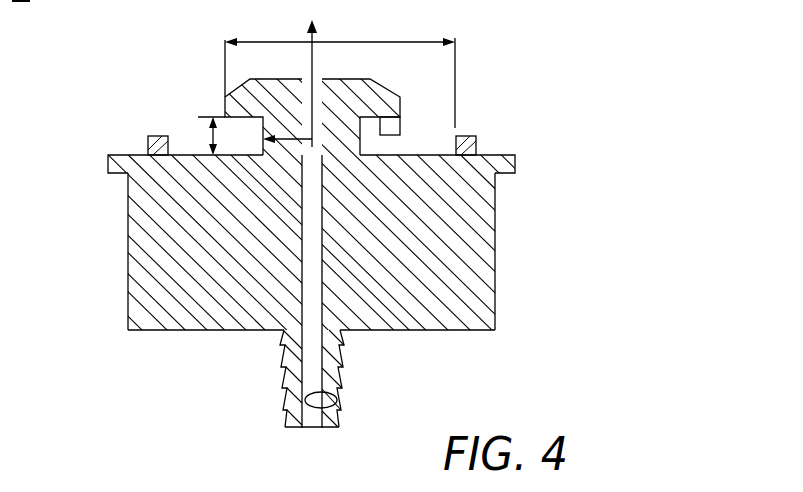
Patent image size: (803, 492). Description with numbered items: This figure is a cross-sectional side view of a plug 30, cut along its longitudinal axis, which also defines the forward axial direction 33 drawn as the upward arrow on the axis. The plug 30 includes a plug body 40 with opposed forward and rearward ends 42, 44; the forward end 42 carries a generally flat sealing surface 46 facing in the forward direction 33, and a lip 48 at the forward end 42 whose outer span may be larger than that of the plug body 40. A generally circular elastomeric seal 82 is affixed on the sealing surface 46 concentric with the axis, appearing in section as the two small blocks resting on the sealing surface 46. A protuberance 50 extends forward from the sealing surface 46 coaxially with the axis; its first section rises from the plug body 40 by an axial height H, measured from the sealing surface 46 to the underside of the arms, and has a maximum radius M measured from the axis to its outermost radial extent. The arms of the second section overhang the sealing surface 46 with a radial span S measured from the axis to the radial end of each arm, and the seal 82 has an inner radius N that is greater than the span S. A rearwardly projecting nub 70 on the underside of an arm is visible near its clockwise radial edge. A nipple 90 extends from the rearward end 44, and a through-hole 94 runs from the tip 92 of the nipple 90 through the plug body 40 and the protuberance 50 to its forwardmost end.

The plug 30 is at (122, 132).
The forward axial direction 33 is at (325, 17).
The plug body 40 is at (128, 253).
The forward end 42 is at (128, 181).
The rearward end 44 is at (128, 328).
The sealing surface 46 is at (188, 155).
The lip 48 is at (515, 163).
The protuberance 50 is at (349, 74).
The nub 70 is at (389, 126).
The elastomeric seal 82 is at (477, 146).
The nipple 90 is at (340, 373).
The tip 92 is at (295, 430).
The through-hole 94 is at (337, 400).
The radial span S is at (273, 42).
The inner radius N is at (417, 42).
The axial height H is at (212, 135).
The maximum radius M is at (290, 137).